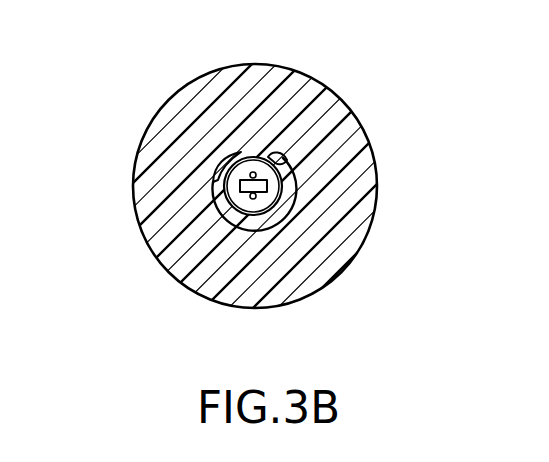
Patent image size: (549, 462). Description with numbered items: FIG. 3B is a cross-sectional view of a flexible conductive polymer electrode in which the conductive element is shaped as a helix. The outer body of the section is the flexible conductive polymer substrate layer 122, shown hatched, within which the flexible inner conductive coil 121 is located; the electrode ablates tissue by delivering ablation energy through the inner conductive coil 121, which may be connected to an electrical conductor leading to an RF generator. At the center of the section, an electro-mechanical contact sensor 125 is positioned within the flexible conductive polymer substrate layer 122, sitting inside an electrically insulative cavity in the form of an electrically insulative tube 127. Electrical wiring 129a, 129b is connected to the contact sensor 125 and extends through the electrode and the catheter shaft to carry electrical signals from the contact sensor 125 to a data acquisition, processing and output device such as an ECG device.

The flexible conductive polymer substrate layer 122 is at (198, 265).
The flexible inner conductive coil 121 is at (280, 155).
The electrically insulative tube 127 is at (273, 208).
The electro-mechanical contact sensor 125 is at (267, 186).
The electrical wiring 129a is at (253, 172).
The electrical wiring 129b is at (253, 199).